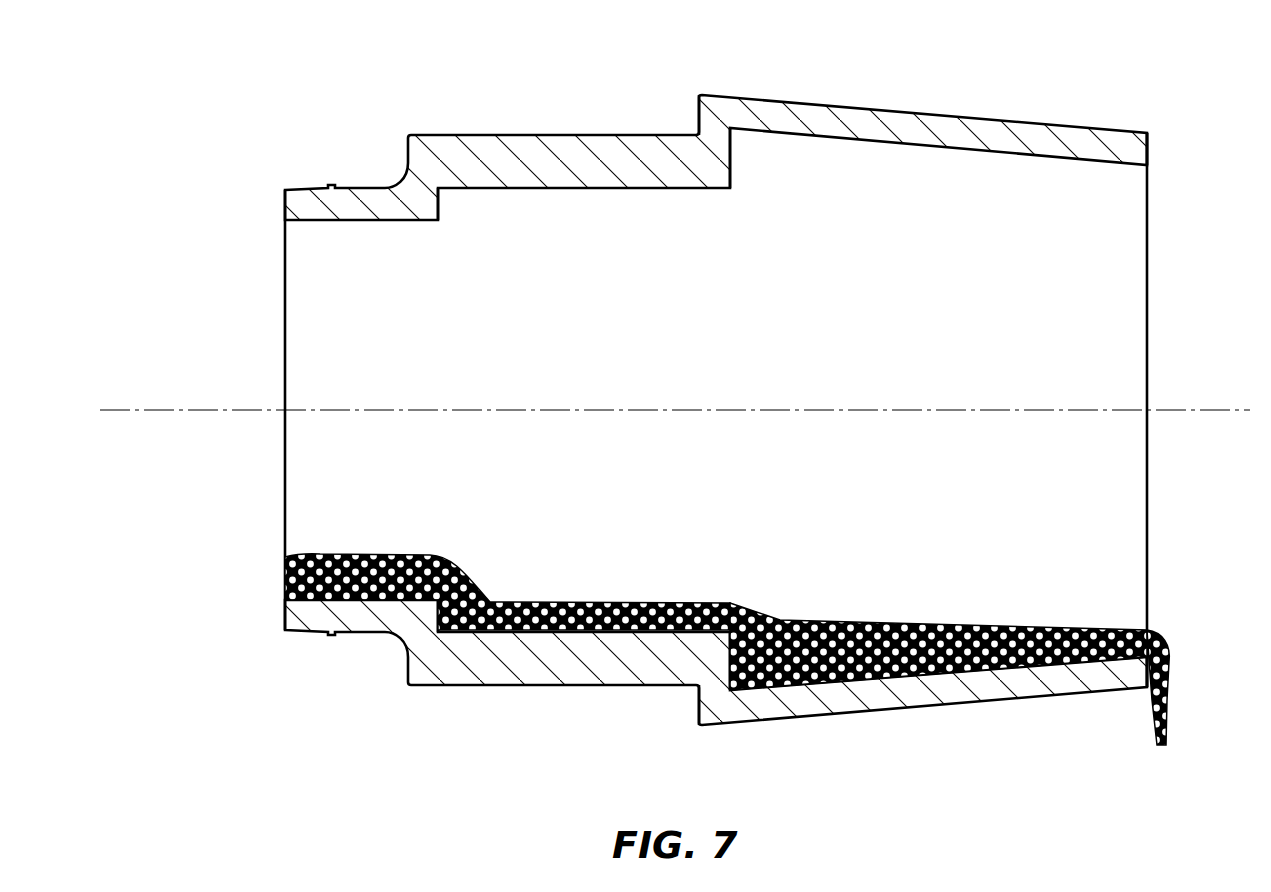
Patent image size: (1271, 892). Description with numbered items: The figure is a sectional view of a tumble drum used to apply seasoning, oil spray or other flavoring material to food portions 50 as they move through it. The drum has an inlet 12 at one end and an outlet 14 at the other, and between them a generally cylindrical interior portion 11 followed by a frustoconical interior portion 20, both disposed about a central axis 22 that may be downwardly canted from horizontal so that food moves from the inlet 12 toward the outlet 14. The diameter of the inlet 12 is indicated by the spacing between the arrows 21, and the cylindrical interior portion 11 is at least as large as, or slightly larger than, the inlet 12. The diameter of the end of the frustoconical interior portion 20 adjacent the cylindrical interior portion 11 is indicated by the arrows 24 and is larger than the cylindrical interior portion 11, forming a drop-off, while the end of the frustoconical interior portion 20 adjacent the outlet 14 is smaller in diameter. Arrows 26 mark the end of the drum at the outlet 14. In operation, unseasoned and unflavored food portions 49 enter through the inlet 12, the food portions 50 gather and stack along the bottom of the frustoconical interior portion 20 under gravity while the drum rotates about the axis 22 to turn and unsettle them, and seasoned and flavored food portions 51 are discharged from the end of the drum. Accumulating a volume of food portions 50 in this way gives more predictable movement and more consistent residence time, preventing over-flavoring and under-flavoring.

The cylindrical interior portion 11 is at (634, 549).
The inlet 12 is at (258, 322).
The outlet 14 is at (1180, 322).
The frustoconical interior portion 20 is at (1006, 554).
The arrows indicating inlet diameter 21 is at (362, 210).
The central axis 22 is at (197, 412).
The arrows indicating frustoconical portion diameter 24 is at (730, 117).
The outlet end edge 26 is at (1127, 155).
The unseasoned and unflavored food portions 49 is at (347, 552).
The food portions 50 is at (886, 627).
The seasoned and flavored food portions 51 is at (1172, 698).